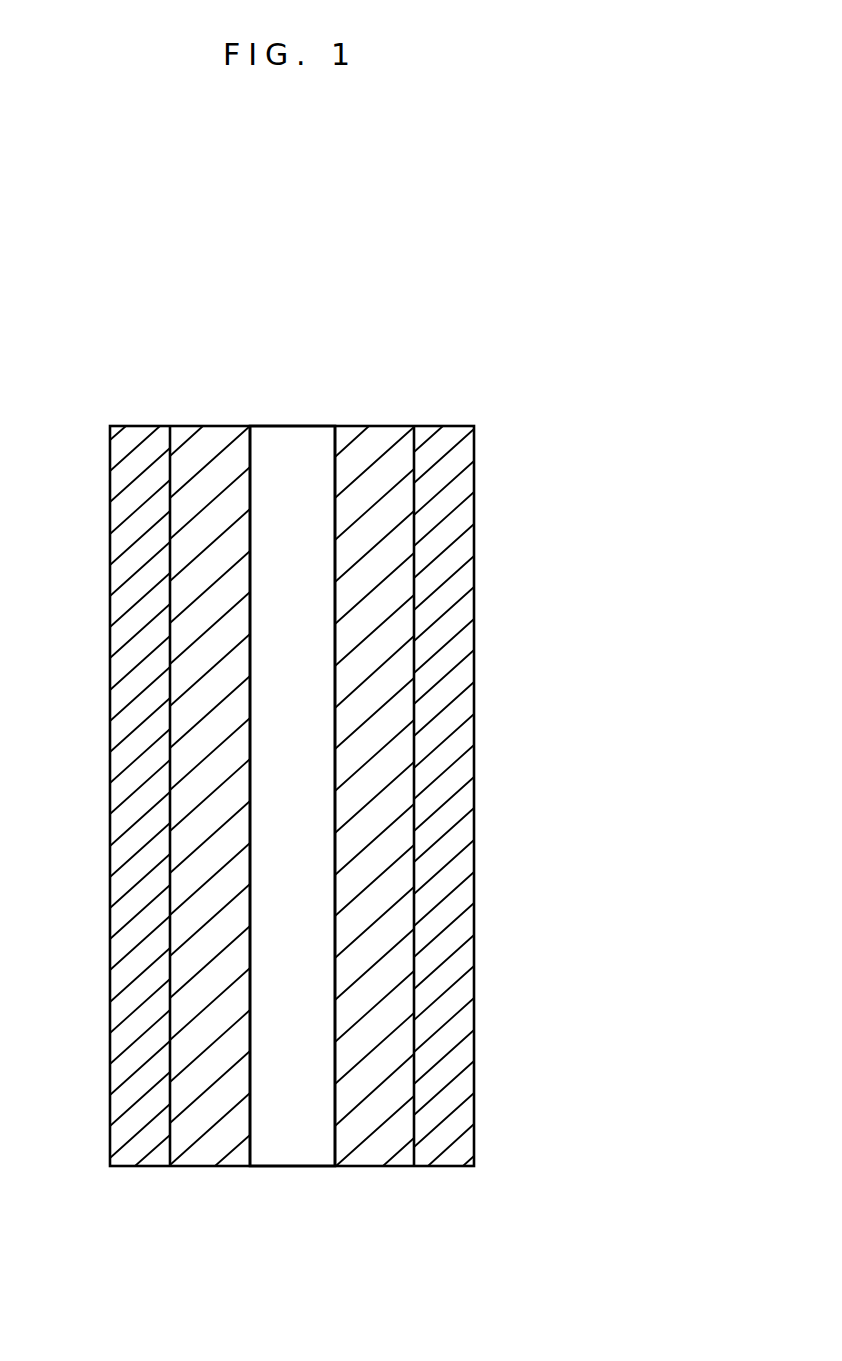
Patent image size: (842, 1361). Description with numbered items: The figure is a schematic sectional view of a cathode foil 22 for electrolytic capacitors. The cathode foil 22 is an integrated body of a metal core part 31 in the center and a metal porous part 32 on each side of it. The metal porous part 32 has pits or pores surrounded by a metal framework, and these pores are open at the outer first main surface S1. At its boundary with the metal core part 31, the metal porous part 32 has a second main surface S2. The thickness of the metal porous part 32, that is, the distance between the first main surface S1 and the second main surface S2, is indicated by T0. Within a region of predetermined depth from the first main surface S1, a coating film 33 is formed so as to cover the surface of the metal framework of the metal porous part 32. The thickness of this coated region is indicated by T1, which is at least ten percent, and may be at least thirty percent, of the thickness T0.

The cathode foil 22 is at (295, 764).
The metal core part 31 is at (291, 1146).
The metal porous part 32 is at (295, 856).
The coating film 33 is at (250, 1236).
The first main surface S1 is at (110, 741).
The second main surface S2 is at (257, 547).
The thickness of metal porous part T0 is at (250, 424).
The thickness of coating-film region T1 is at (170, 424).